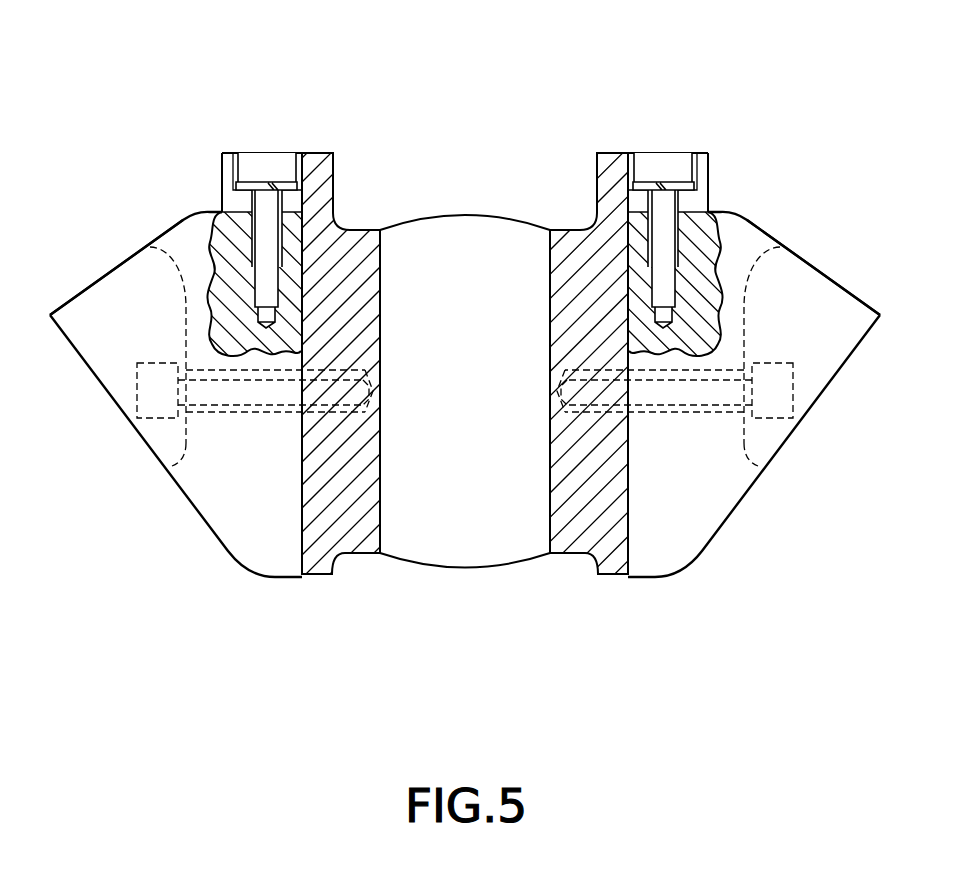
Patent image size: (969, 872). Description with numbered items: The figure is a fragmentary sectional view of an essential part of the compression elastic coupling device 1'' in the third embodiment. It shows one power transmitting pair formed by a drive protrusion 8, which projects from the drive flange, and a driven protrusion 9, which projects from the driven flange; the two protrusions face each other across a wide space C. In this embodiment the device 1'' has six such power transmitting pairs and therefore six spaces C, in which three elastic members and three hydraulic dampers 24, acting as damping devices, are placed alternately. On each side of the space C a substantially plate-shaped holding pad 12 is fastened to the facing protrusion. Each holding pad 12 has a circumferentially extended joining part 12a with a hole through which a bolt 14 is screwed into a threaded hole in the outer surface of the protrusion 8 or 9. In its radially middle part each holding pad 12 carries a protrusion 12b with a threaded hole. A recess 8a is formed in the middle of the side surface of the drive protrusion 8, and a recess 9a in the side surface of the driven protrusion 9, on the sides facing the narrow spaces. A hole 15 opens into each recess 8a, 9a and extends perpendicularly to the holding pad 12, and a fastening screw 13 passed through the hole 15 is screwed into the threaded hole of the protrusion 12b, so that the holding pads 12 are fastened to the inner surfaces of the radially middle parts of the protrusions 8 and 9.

The drive protrusion 8 is at (737, 237).
The recess 8a is at (793, 277).
The driven protrusion 9 is at (193, 237).
The recess 9a is at (137, 277).
The holding pad 12 is at (296, 204).
The joining part 12a is at (334, 152).
The protrusion 12b is at (360, 513).
The fastening screw 13 is at (147, 361).
The bolt 14 is at (252, 160).
The hole 15 is at (252, 413).
The hydraulic damper 24 is at (450, 547).
The wide space C is at (434, 187).
The compression elastic coupling device 1'' is at (492, 112).